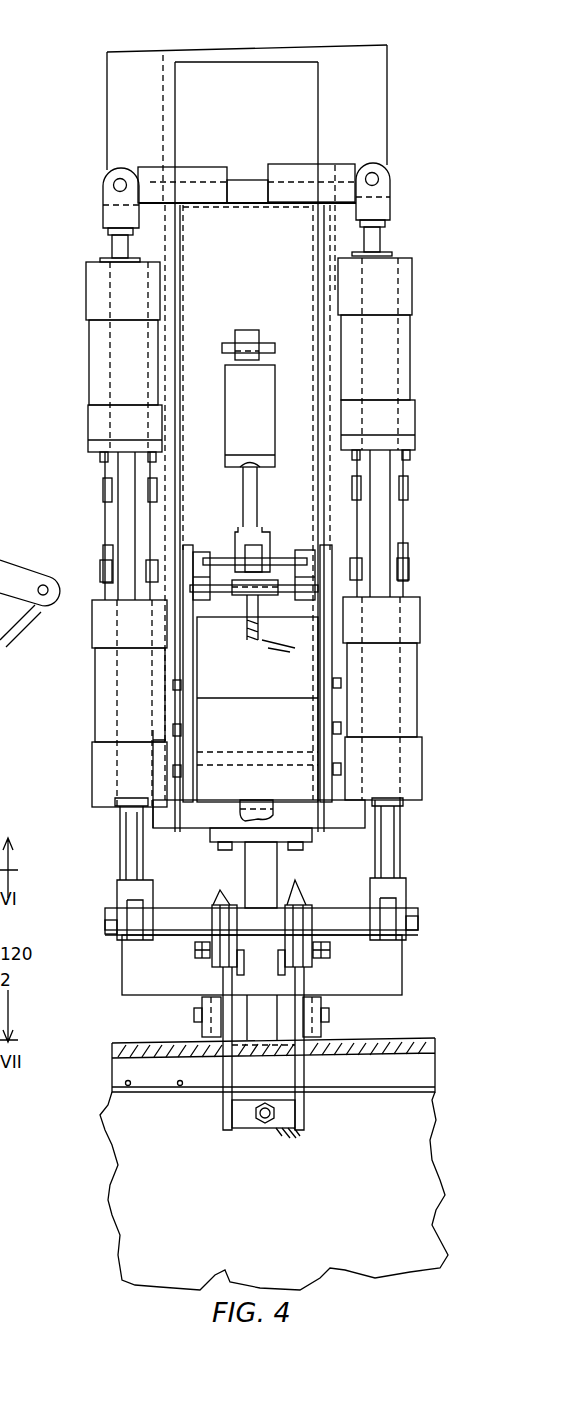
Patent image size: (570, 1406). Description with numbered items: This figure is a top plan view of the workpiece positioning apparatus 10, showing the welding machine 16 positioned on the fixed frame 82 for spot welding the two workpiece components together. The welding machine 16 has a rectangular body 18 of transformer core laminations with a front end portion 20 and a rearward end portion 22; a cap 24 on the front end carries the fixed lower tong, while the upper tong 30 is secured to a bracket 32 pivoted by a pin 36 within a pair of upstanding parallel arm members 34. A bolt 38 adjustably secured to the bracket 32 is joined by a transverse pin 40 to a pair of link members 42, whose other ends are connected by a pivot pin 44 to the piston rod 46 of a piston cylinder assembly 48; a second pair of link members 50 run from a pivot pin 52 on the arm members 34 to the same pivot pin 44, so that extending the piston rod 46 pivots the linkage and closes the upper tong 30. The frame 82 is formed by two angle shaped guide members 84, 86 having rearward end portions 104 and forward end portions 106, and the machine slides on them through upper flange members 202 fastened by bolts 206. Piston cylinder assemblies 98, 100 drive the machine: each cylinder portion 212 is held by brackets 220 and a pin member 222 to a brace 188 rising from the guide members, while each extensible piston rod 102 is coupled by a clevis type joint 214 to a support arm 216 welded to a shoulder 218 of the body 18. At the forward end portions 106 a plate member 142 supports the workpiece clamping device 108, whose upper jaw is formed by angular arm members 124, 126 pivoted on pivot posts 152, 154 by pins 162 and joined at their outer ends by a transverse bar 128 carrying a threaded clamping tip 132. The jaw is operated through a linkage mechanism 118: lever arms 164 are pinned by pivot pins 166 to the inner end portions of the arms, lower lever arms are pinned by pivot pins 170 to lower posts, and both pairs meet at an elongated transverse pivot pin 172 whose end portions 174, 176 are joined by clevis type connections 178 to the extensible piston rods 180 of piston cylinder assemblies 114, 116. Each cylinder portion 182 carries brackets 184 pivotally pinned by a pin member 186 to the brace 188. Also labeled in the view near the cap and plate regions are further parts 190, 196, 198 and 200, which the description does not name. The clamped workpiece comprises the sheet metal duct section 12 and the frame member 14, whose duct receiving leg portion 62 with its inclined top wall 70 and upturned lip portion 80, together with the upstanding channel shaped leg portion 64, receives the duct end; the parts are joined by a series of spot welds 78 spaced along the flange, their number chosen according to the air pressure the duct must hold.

The workpiece positioning apparatus 10 is at (102, 66).
The first workpiece component 12 is at (266, 1239).
The second workpiece component 14 is at (440, 1042).
The welding machine 16 is at (256, 299).
The rectangular body 18 is at (256, 181).
The front end portion 20 is at (340, 782).
The rearward end portion 22 is at (300, 214).
The cap 24 is at (310, 802).
The upper tong 30 is at (256, 802).
The bracket 32 is at (240, 693).
The arm members 34 is at (192, 712).
The pin 36 is at (258, 758).
The bolt 38 is at (250, 642).
The transverse pin 40 is at (234, 596).
The link members 42 is at (205, 598).
The pivot pin 44 is at (275, 545).
The piston rod 46 is at (243, 482).
The piston cylinder assembly 48 is at (232, 382).
The second link members 50 is at (204, 552).
The pivot pin 52 is at (322, 562).
The duct receiving leg portion 62 is at (106, 1066).
The upstanding channel shaped leg portion 64 is at (134, 1046).
The inclined top wall 70 is at (386, 1070).
The spot welds 78 is at (128, 1086).
The upturned lip portion 80 is at (408, 1094).
The fixed frame 82 is at (104, 100).
The guide member 84 is at (112, 125).
The guide member 86 is at (387, 68).
The piston cylinder assembly 98 is at (84, 330).
The piston cylinder assembly 100 is at (416, 340).
The extensible piston rod 102 is at (114, 248).
The rearward end portion 104 is at (150, 52).
The forward end portion 106 is at (200, 996).
The workpiece clamping device 108 is at (216, 1138).
The piston cylinder assembly 114 is at (88, 668).
The piston cylinder assembly 116 is at (424, 650).
The linkage mechanism 118 is at (312, 972).
The arm member 124 is at (224, 1115).
The arm member 126 is at (306, 1106).
The transverse bar 128 is at (242, 1122).
The clamping tip 132 is at (268, 1124).
The plate member 142 is at (200, 984).
The pivot post 152 is at (204, 1000).
The pivot post 154 is at (324, 1000).
The pins 162 is at (198, 1020).
The lever arms 164 is at (222, 900).
The pivot pins 166 is at (245, 944).
The pivot pins 170 is at (195, 951).
The transverse pivot pin 172 is at (322, 908).
The end portion 174 is at (135, 925).
The end portion 176 is at (392, 922).
The clevis type connections 178 is at (125, 893).
The extensible piston rods 180 is at (118, 823).
The cylinder portion 182 is at (100, 712).
The brackets 184 is at (110, 548).
The pin member 186 is at (104, 572).
The brace 188 is at (122, 514).
The hidden slot 190 is at (280, 1046).
The central post 196 is at (248, 864).
The mounting plate 198 is at (314, 832).
The mounting bolt 200 is at (312, 856).
The upper flange members 202 is at (160, 232).
The bolts 206 is at (176, 685).
The cylinder portion 212 is at (90, 278).
The clevis type joint 214 is at (98, 184).
The support arm 216 is at (148, 168).
The shoulder 218 is at (207, 180).
The brackets 220 is at (100, 462).
The pin member 222 is at (104, 492).